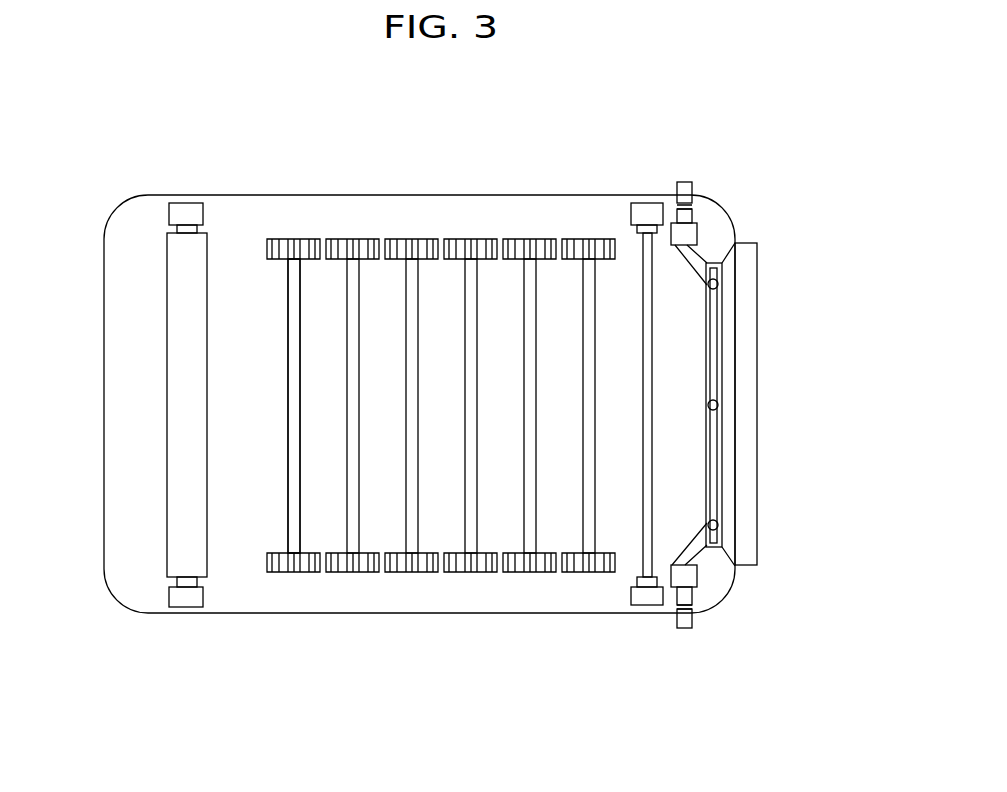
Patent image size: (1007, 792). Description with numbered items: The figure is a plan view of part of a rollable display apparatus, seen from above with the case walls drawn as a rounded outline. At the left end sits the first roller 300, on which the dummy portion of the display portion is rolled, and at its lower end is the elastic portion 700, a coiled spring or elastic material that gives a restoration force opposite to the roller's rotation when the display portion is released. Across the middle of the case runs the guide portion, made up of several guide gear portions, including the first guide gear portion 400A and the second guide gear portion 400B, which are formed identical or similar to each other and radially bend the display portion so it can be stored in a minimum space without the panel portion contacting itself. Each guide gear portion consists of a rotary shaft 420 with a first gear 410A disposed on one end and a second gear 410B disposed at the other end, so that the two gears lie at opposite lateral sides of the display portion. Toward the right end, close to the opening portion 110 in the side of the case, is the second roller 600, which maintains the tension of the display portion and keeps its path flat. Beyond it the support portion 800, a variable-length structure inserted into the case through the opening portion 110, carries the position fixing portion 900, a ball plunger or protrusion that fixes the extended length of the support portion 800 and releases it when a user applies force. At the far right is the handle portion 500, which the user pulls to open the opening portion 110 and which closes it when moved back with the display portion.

The opening portion 110 is at (735, 458).
The first roller 300 is at (165, 402).
The elastic portion 700 is at (165, 595).
The first guide gear portion 400A is at (363, 297).
The second guide gear portion 400B is at (285, 297).
The first gear 410A is at (293, 572).
The second gear 410B is at (297, 240).
The rotary shaft 420 is at (290, 487).
The handle portion 500 is at (752, 354).
The second roller 600 is at (652, 317).
The support portion 800 is at (719, 405).
The position fixing portion 900 is at (692, 182).